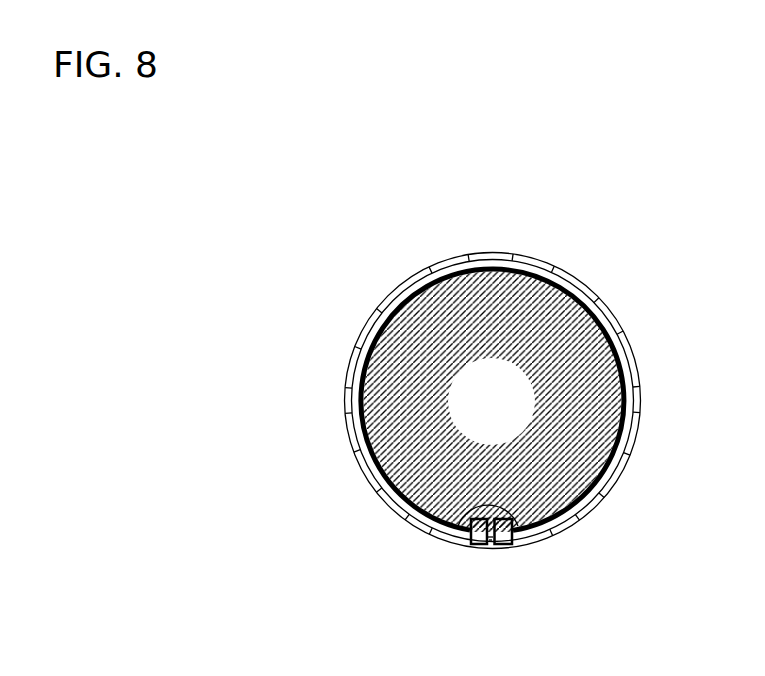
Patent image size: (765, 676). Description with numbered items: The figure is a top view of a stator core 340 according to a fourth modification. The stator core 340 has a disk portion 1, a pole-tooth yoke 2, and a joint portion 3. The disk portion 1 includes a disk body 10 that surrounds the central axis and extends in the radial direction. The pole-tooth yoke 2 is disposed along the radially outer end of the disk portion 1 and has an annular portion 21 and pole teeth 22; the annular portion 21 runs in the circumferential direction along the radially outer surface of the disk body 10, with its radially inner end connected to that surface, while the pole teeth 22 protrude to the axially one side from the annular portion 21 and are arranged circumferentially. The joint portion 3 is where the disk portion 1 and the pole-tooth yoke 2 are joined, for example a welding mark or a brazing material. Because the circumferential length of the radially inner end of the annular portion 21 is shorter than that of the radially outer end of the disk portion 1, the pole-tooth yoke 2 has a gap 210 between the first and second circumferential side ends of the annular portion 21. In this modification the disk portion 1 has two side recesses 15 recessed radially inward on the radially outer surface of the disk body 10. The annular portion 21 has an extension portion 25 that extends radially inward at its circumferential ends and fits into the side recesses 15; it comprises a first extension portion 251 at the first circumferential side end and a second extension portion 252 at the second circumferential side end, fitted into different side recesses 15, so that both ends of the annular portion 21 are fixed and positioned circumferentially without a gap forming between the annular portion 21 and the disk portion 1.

The stator core 340 is at (243, 332).
The disk portion 1 is at (388, 432).
The pole-tooth yoke 2 is at (280, 303).
The annular portion 21 is at (367, 334).
The pole teeth 22 is at (345, 402).
The joint portion 3 is at (388, 501).
The disk body 10 is at (565, 486).
The side recess 15 is at (514, 502).
The extension portion 25 is at (415, 565).
The first extension portion 251 is at (470, 522).
The second extension portion 252 is at (470, 541).
The gap 210 is at (490, 556).